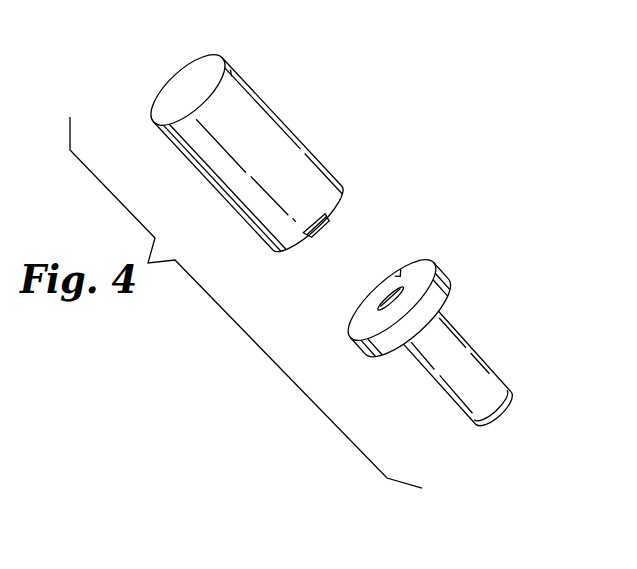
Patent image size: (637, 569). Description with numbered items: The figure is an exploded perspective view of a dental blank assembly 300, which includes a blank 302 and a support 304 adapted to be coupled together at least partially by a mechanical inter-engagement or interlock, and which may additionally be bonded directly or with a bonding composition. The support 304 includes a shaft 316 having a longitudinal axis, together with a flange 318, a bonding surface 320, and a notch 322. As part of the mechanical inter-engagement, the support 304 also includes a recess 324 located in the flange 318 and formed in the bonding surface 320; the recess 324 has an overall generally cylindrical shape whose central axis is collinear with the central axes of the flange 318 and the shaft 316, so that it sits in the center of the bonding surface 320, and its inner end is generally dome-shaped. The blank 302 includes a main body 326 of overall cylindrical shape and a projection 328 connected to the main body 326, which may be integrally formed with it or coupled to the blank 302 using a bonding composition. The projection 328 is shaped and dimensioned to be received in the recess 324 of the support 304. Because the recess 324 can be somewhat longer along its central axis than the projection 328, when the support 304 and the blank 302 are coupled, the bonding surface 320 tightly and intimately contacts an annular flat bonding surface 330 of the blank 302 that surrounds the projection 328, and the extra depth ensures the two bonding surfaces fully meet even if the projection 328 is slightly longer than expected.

The dental blank assembly 300 is at (447, 102).
The blank 302 is at (275, 92).
The support 304 is at (470, 330).
The shaft 316 is at (493, 377).
The flange 318 is at (442, 275).
The bonding surface 320 is at (360, 328).
The notch 322 is at (402, 274).
The recess 324 is at (388, 300).
The main body 326 is at (313, 167).
The projection 328 is at (331, 218).
The annular flat bonding surface 330 is at (288, 244).